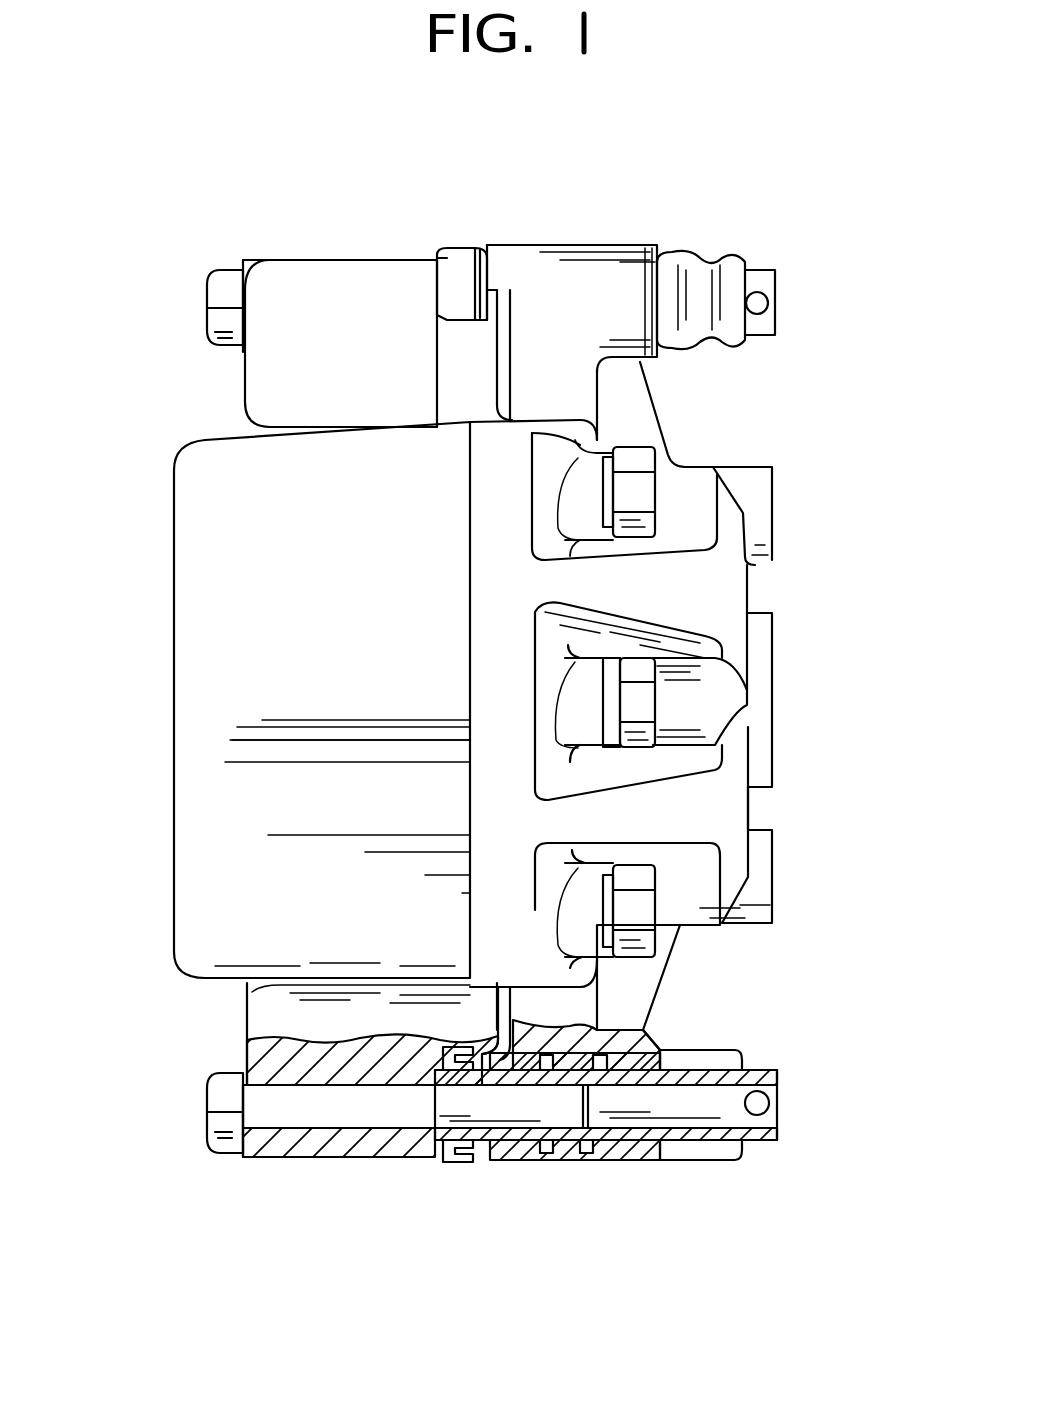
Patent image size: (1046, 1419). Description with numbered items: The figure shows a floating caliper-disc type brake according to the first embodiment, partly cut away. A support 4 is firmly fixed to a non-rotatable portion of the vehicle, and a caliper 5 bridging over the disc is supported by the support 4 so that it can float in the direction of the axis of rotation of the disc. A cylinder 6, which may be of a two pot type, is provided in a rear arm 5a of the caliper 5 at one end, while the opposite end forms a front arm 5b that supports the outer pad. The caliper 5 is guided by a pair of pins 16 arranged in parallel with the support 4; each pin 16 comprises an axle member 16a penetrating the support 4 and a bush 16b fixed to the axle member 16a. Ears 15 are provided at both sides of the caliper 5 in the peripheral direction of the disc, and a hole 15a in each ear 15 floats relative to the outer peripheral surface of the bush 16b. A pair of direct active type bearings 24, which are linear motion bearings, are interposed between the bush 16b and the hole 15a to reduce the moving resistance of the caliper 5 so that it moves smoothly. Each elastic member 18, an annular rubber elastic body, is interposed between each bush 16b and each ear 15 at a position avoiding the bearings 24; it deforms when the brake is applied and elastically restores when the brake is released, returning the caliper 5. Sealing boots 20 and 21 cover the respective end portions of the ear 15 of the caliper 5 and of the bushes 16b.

The support 4 is at (262, 1020).
The caliper 5 is at (170, 660).
The rear arm 5a is at (727, 808).
The front arm 5b is at (205, 836).
The cylinder 6 is at (778, 643).
The ear 15 is at (593, 270).
The hole 15a is at (587, 1165).
The pin 16 is at (222, 275).
The axle member 16a is at (340, 1118).
The bush 16b is at (768, 1142).
The elastic member 18 is at (540, 1163).
The sealing boot 20 is at (458, 265).
The sealing boot 21 is at (720, 255).
The direct active type bearing 24 is at (500, 1162).